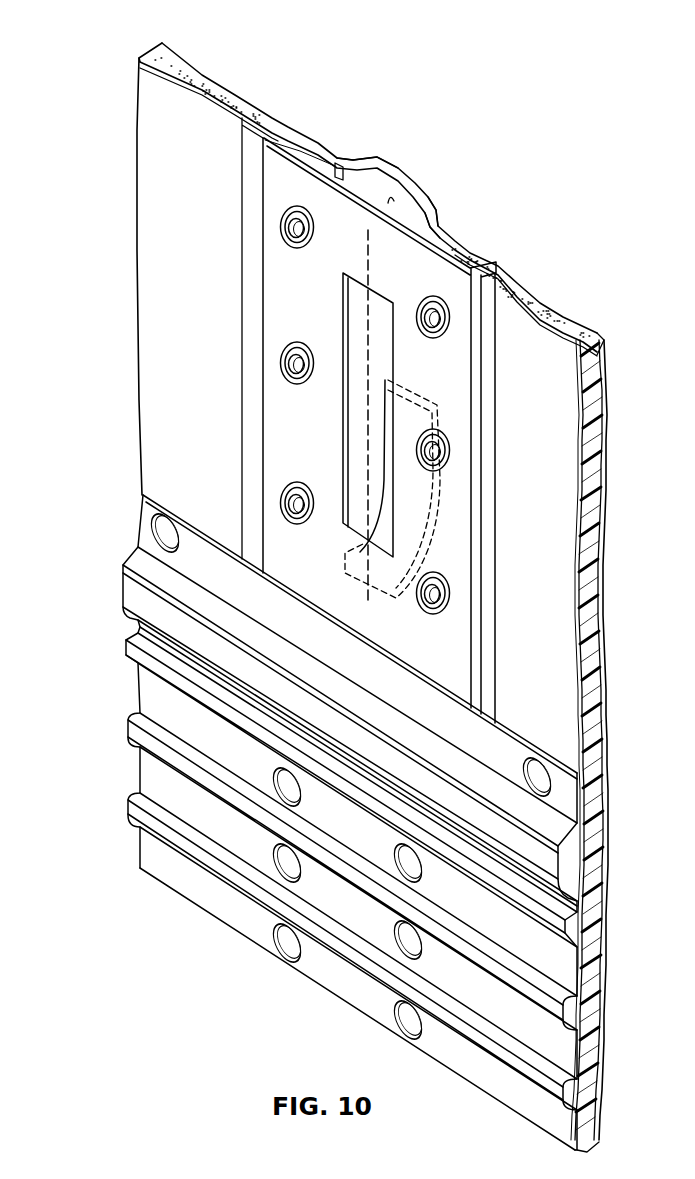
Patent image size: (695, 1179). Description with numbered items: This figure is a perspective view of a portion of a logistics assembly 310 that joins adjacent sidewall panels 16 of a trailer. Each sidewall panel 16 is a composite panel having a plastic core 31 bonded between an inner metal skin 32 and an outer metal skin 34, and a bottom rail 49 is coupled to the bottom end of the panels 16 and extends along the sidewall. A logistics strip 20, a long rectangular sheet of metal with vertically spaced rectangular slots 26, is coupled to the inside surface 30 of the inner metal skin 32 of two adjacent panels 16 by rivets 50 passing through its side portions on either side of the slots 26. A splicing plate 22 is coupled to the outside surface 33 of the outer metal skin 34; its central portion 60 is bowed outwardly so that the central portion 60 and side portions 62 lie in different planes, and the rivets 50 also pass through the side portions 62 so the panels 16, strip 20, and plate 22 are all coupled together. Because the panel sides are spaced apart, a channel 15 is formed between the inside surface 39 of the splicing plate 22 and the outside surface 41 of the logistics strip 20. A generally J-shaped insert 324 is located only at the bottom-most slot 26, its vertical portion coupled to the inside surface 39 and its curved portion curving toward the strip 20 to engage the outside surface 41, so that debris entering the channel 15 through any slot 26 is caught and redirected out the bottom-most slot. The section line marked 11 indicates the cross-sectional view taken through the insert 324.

The section line 11 is at (368, 230).
The channel 15 is at (410, 194).
The sidewall panel 16 is at (136, 136).
The logistics strip 20 is at (247, 428).
The splicing plate 22 is at (356, 150).
The slot 26 is at (362, 441).
The inside surface 30 is at (163, 331).
The plastic core 31 is at (160, 60).
The inner metal skin 32 is at (170, 358).
The outside surface 33 is at (605, 430).
The outer metal skin 34 is at (203, 70).
The inside surface 39 is at (413, 207).
The outside surface 41 is at (392, 202).
The bottom rail 49 is at (146, 845).
The rivet 50 is at (292, 232).
The central portion 60 is at (397, 197).
The side portion 62 is at (308, 140).
The logistics assembly 310 is at (478, 151).
The insert 324 is at (421, 390).